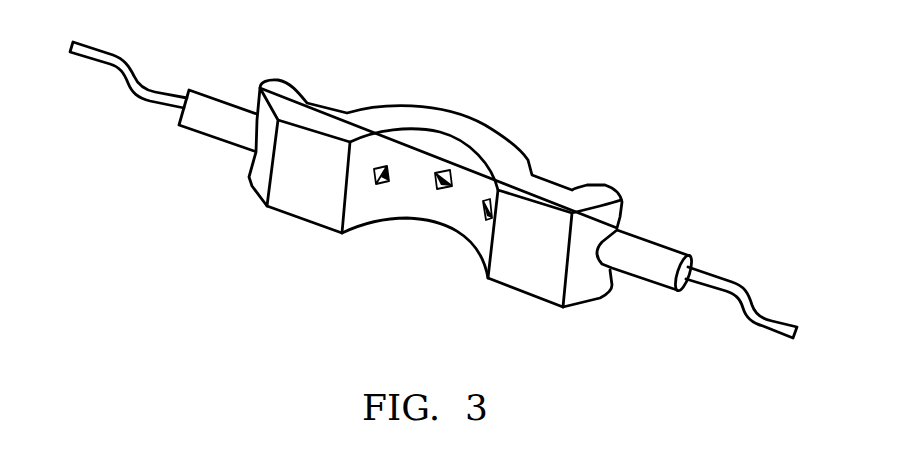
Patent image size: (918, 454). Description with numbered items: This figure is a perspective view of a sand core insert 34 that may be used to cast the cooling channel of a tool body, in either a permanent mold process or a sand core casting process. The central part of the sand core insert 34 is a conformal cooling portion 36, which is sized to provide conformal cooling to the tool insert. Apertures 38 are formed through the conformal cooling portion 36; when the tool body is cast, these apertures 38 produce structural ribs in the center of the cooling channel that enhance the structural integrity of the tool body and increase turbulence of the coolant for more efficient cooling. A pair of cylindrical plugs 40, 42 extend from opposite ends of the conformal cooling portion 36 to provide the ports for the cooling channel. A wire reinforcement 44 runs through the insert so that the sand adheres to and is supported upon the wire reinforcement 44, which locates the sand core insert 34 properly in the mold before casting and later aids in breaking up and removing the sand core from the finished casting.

The sand core insert 34 is at (592, 80).
The conformal cooling portion 36 is at (527, 155).
The apertures 38 is at (443, 188).
The cylindrical plug 40 is at (658, 285).
The cylindrical plug 42 is at (203, 135).
The wire reinforcement 44 is at (737, 280).